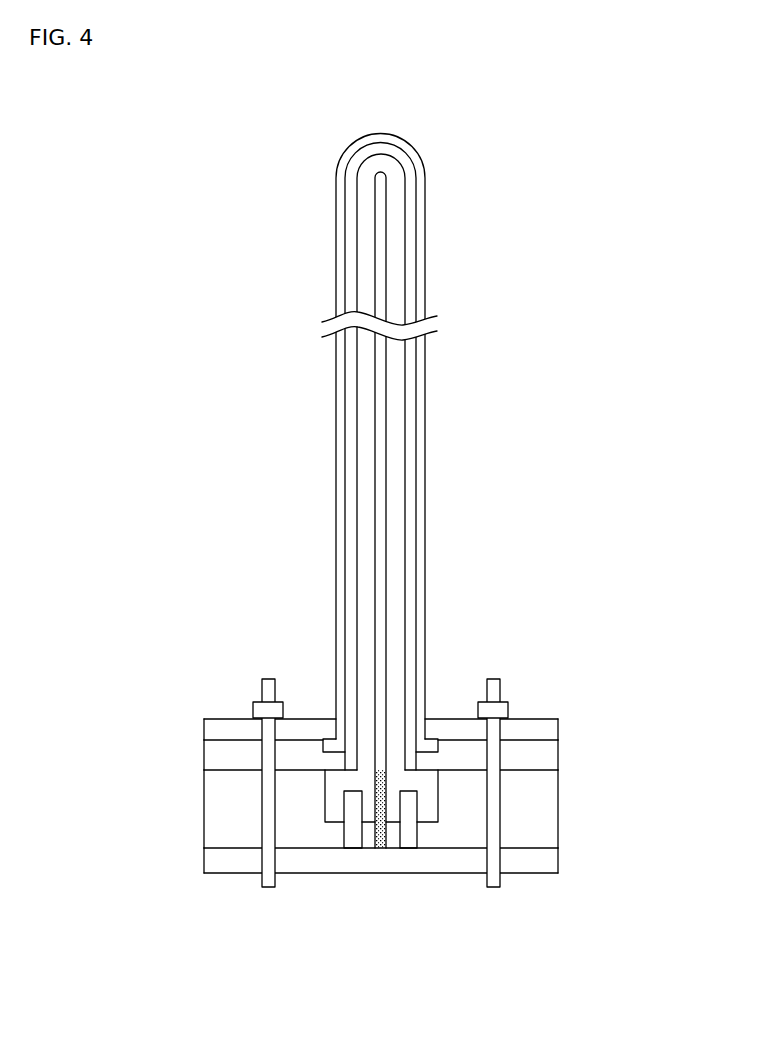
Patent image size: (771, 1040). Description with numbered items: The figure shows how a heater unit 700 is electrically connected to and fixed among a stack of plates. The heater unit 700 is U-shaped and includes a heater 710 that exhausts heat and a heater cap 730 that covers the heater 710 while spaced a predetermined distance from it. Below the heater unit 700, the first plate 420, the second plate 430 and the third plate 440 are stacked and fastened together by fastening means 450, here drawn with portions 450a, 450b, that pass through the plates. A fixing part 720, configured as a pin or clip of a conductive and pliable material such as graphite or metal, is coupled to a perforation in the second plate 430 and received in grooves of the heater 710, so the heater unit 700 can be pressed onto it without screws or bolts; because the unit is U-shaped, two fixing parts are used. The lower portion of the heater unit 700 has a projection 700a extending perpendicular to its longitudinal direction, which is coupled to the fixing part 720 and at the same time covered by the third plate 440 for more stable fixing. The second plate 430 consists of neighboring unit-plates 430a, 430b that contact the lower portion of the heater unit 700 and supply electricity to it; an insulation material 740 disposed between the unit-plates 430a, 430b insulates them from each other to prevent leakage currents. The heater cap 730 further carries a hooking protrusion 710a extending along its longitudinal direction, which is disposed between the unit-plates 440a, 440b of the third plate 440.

The heater unit 700 is at (304, 491).
The heater 710 is at (339, 452).
The hooking protrusion 710a is at (332, 747).
The heater cap 730 is at (232, 398).
The projection 700a is at (430, 813).
The fixing part 720 is at (410, 803).
The insulation material 740 is at (377, 832).
The first plate 420 is at (210, 861).
The second plate 430 is at (381, 891).
The unit-plate 430a is at (307, 838).
The unit-plate 430b is at (462, 838).
The third plate 440 is at (203, 783).
The unit-plate 440a is at (210, 759).
The unit-plate 440b is at (210, 728).
The fastening means 450 is at (554, 783).
The lower plate of second fixing bracket 450a is at (496, 758).
The upper plate of second fixing bracket 450b is at (503, 711).